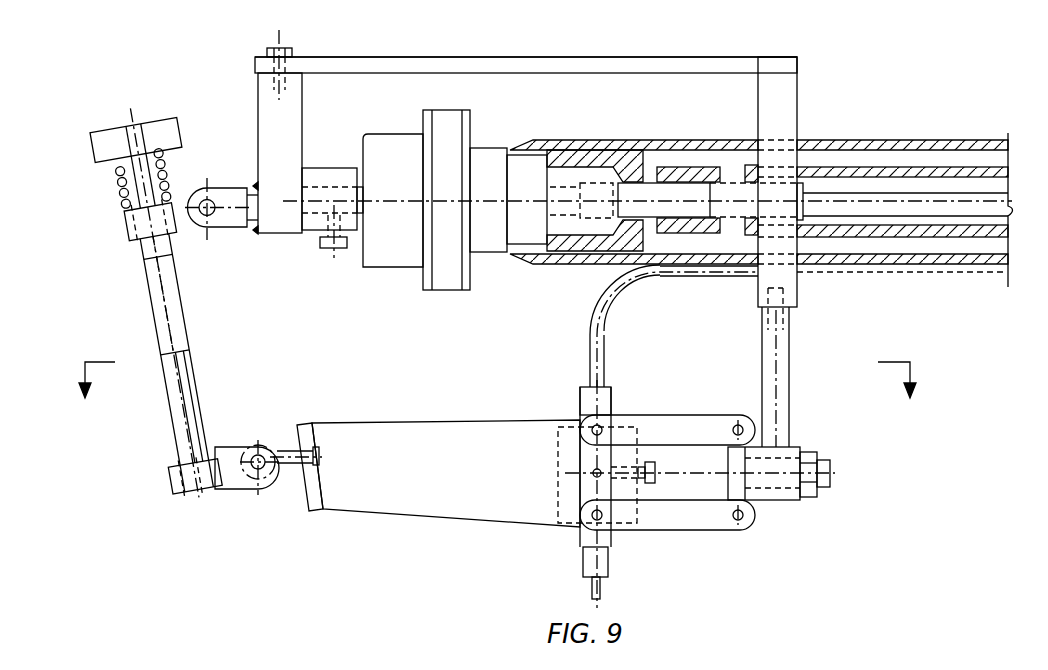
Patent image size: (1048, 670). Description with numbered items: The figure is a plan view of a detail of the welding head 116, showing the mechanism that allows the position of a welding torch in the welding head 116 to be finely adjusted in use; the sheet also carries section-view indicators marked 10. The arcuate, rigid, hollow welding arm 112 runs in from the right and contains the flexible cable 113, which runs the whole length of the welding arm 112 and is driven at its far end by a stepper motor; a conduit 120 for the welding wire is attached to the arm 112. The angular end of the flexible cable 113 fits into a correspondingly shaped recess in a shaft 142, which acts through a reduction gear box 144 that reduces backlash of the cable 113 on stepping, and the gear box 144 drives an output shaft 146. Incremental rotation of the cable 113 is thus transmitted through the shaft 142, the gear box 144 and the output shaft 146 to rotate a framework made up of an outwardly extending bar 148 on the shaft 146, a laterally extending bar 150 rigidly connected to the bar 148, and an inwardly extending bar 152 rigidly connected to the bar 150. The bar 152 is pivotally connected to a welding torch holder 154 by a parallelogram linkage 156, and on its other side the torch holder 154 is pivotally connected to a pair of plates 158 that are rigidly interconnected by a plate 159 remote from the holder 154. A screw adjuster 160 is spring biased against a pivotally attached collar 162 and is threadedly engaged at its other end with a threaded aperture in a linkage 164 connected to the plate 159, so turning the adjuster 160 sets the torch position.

The section view indicator 10 is at (497, 397).
The welding arm 112 is at (887, 140).
The flexible cable 113 is at (937, 195).
The welding head 116 is at (523, 58).
The conduit 120 is at (948, 276).
The shaft 142 is at (650, 190).
The reduction gear box 144 is at (447, 277).
The output shaft 146 is at (360, 208).
The outwardly extending bar 148 is at (278, 128).
The laterally extending bar 150 is at (408, 60).
The inwardly extending bar 152 is at (790, 100).
The welding torch holder 154 is at (567, 504).
The parallelogram linkage 156 is at (667, 415).
The plates 158 is at (405, 503).
The plate 159 is at (307, 504).
The screw adjuster 160 is at (152, 306).
The collar 162 is at (125, 226).
The linkage 164 is at (233, 484).